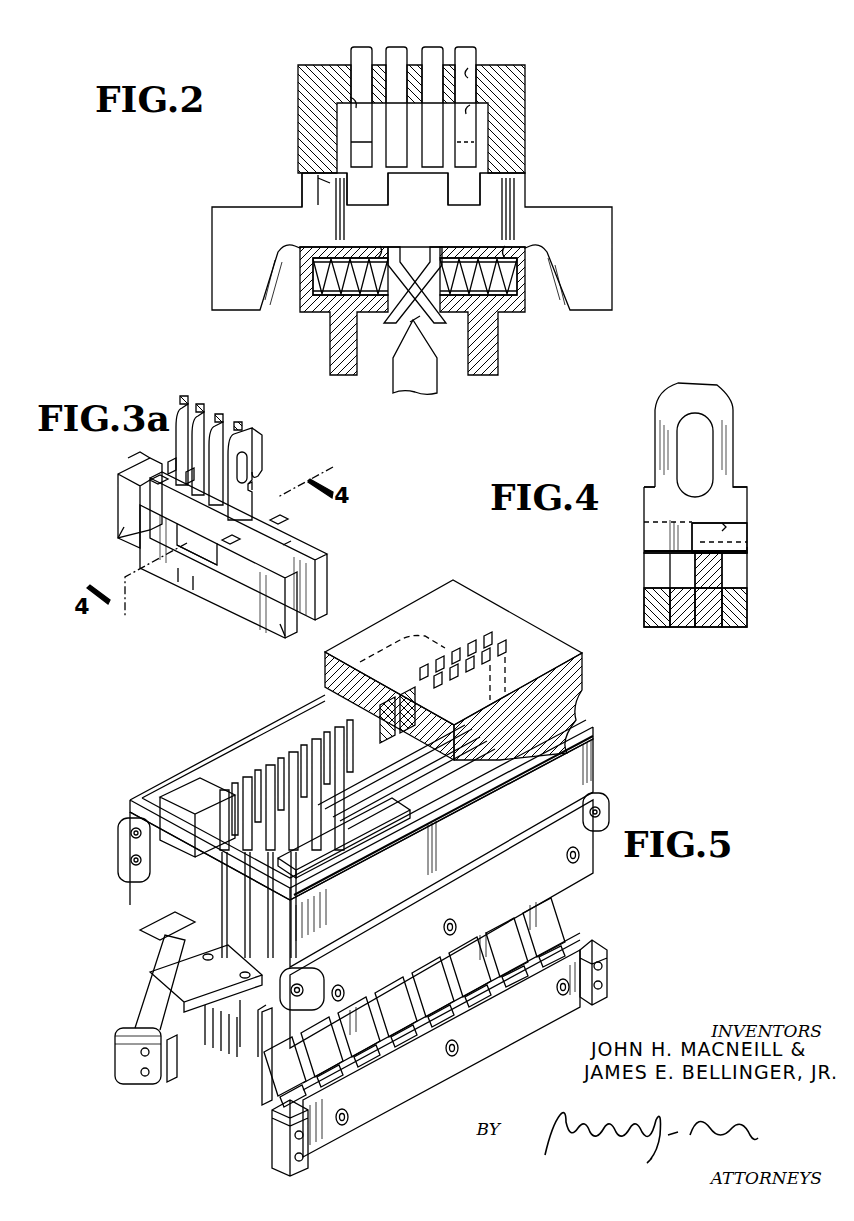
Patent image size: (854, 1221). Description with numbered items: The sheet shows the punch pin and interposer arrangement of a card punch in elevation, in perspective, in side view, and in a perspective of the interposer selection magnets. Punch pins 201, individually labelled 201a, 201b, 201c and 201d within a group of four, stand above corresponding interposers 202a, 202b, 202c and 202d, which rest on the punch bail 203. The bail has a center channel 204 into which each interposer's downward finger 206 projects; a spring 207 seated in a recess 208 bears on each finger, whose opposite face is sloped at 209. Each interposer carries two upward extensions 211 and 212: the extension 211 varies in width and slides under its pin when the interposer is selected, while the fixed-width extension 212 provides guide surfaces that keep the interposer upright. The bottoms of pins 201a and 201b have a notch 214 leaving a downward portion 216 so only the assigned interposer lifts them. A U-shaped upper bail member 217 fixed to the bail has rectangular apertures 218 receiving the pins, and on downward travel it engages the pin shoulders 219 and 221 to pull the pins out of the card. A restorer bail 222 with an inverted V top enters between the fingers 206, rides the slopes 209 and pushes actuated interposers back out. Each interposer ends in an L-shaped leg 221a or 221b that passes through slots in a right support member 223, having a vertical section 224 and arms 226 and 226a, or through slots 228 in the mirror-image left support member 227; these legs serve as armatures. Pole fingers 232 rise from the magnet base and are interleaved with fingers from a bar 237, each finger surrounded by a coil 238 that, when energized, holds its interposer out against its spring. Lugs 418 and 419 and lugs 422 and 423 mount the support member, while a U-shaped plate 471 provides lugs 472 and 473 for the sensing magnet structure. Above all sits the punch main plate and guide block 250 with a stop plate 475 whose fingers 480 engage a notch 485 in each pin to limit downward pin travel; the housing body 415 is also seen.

In FIG. 4, the punch pins 201 is at (720, 395).
In FIG. 5, the punch pins 201 is at (478, 654).
In FIG. 2, the punch pin 201a is at (465, 50).
In FIG. 3A, the punch pin 201a is at (248, 430).
In FIG. 4, the punch pin 201a is at (650, 507).
In FIG. 2, the punch pin 201b is at (362, 56).
In FIG. 3A, the punch pin 201b is at (182, 404).
In FIG. 4, the punch pin 201b is at (752, 548).
In FIG. 2, the punch pin 201c is at (430, 52).
In FIG. 3A, the punch pin 201c is at (225, 422).
In FIG. 4, the punch pin 201c is at (748, 530).
In FIG. 2, the punch pin 201d is at (393, 50).
In FIG. 3A, the punch pin 201d is at (205, 410).
In FIG. 4, the punch pin 201d is at (748, 539).
In FIG. 2, the interposer 202a is at (600, 240).
In FIG. 3A, the interposer 202a is at (236, 582).
In FIG. 4, the interposer 202a is at (655, 628).
In FIG. 3A, the interposer 202b is at (147, 460).
In FIG. 4, the interposer 202b is at (738, 627).
In FIG. 2, the interposer 202c is at (448, 183).
In FIG. 3A, the interposer 202c is at (318, 578).
In FIG. 4, the interposer 202c is at (705, 628).
In FIG. 2, the interposer 202d is at (383, 195).
In FIG. 3A, the interposer 202d is at (137, 504).
In FIG. 4, the interposer 202d is at (684, 628).
In FIG. 2, the punch bail 203 is at (322, 316).
In FIG. 2, the center channel 204 is at (414, 252).
In FIG. 2, the finger 206 is at (396, 320).
In FIG. 3A, the finger 206 is at (178, 582).
In FIG. 5, the finger 206 is at (232, 1028).
In FIG. 2, the spring 207 is at (378, 258).
In FIG. 2, the recess 208 is at (316, 270).
In FIG. 2, the sloped surface 209 is at (417, 322).
In FIG. 2, the upward extension 211 is at (457, 178).
In FIG. 3A, the upward extension 211 is at (155, 483).
In FIG. 2, the upward extension 212 is at (330, 183).
In FIG. 3A, the upward extension 212 is at (177, 547).
In FIG. 3A, the notch 214 is at (270, 492).
In FIG. 4, the notch 214 is at (724, 522).
In FIG. 4, the downwardly extending portion 216 is at (662, 535).
In FIG. 2, the upper bail member 217 is at (525, 88).
In FIG. 5, the upper bail member 217 is at (190, 978).
In FIG. 2, the rectangular apertures 218 is at (472, 70).
In FIG. 2, the shoulder 219 is at (350, 97).
In FIG. 3A, the shoulder 219 is at (170, 466).
In FIG. 4, the shoulder 219 is at (651, 485).
In FIG. 3A, the shoulder 221 is at (267, 462).
In FIG. 4, the shoulder 221 is at (722, 523).
In FIG. 3A, the leg 221a is at (280, 624).
In FIG. 3A, the leg 221b is at (124, 527).
In FIG. 2, the restorer bail 222 is at (424, 382).
In FIG. 5, the right hand interposer support member 223 is at (428, 1082).
In FIG. 5, the vertical section 224 is at (240, 1047).
In FIG. 5, the arm 226 is at (157, 918).
In FIG. 5, the arm 226a is at (272, 1092).
In FIG. 5, the left support member 227 is at (170, 1018).
In FIG. 5, the slot 228 is at (173, 948).
In FIG. 5, the finger 232 is at (258, 1057).
In FIG. 5, the bar 237 is at (518, 906).
In FIG. 5, the electric coil 238 is at (555, 897).
In FIG. 5, the punch main plate and guide block 250 is at (453, 580).
In FIG. 5, the housing body 415 is at (393, 847).
In FIG. 5, the mounting lug 418 is at (280, 1158).
In FIG. 5, the mounting lug 419 is at (295, 962).
In FIG. 5, the mounting lug 422 is at (605, 960).
In FIG. 5, the mounting lug 423 is at (603, 810).
In FIG. 5, the U shaped sheet metal plate 471 is at (130, 805).
In FIG. 5, the mounting lug 472 is at (132, 845).
In FIG. 5, the mounting lug 473 is at (448, 645).
In FIG. 5, the stop plate 475 is at (475, 808).
In FIG. 5, the fingers 480 is at (348, 736).
In FIG. 5, the notch 485 is at (325, 828).